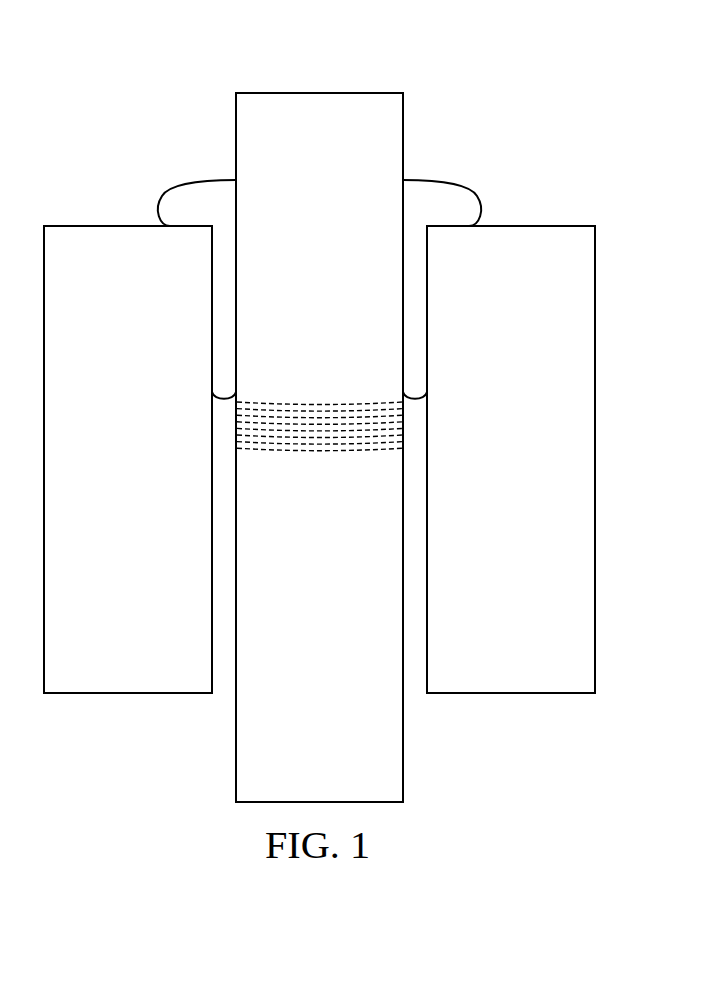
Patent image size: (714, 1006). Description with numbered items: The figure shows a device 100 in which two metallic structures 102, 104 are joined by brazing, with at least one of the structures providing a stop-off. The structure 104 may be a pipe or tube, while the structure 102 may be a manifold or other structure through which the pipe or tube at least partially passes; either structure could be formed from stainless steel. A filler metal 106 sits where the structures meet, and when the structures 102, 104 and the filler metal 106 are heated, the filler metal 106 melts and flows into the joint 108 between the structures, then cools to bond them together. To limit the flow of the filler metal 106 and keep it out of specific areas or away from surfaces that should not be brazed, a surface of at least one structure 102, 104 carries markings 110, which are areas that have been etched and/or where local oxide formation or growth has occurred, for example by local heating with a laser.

The device 100 is at (151, 86).
The structure 102 is at (115, 697).
The structure 104 is at (307, 92).
The filler metal 106 is at (443, 193).
The joint 108 is at (417, 697).
The markings 110 is at (318, 402).